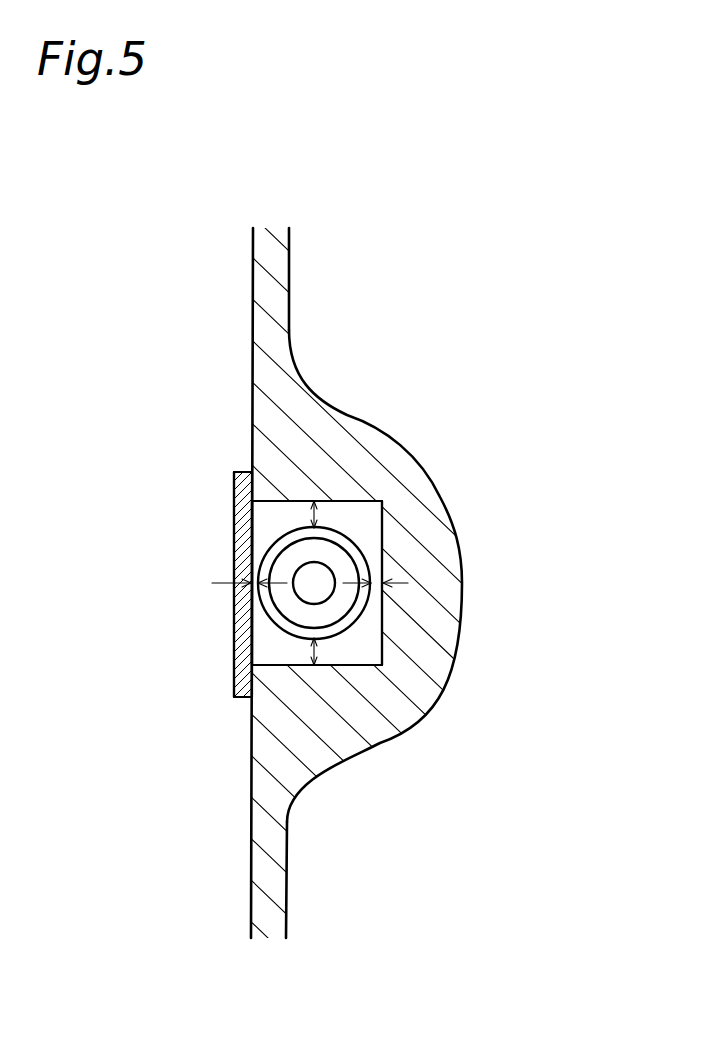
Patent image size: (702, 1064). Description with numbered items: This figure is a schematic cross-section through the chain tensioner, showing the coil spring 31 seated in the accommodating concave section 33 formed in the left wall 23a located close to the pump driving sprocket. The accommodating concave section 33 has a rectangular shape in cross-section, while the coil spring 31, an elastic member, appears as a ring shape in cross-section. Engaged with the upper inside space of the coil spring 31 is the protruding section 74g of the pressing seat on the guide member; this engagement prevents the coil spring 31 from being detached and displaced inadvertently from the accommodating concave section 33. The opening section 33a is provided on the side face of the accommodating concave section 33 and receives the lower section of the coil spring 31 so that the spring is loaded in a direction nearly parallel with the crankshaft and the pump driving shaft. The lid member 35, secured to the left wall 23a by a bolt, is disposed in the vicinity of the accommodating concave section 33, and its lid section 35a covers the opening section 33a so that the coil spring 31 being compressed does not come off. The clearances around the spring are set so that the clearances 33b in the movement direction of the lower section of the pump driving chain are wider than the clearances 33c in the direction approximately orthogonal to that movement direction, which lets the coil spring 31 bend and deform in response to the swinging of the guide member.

The left wall 23a is at (311, 760).
The coil spring 31 is at (332, 630).
The accommodating concave section 33 is at (360, 651).
The opening section 33a is at (252, 528).
The clearances 33b is at (320, 524).
The clearances 33c is at (235, 603).
The lid member 35 is at (235, 495).
The lid section 35a is at (237, 640).
The protruding section 74g is at (316, 583).